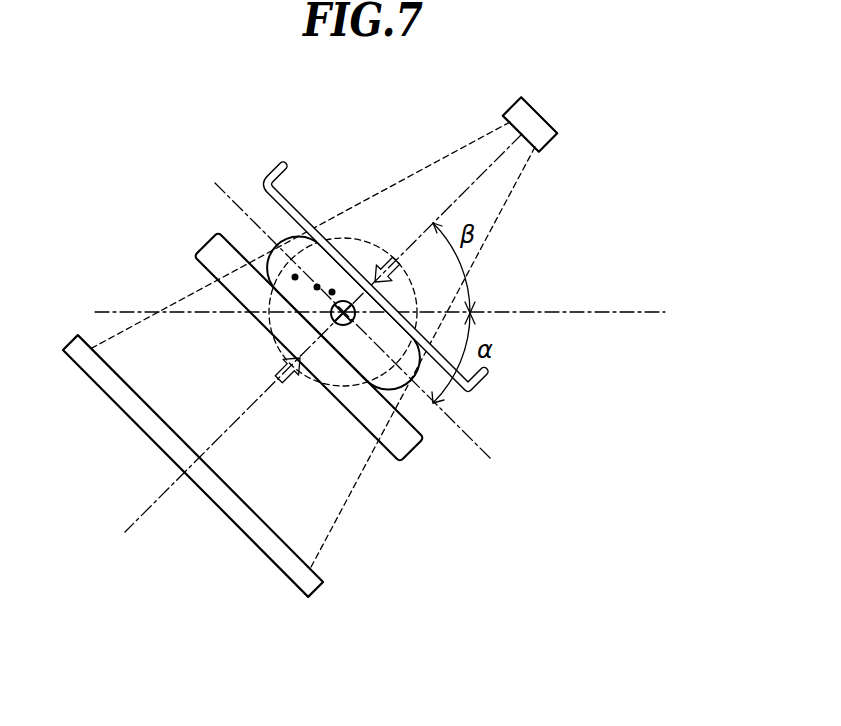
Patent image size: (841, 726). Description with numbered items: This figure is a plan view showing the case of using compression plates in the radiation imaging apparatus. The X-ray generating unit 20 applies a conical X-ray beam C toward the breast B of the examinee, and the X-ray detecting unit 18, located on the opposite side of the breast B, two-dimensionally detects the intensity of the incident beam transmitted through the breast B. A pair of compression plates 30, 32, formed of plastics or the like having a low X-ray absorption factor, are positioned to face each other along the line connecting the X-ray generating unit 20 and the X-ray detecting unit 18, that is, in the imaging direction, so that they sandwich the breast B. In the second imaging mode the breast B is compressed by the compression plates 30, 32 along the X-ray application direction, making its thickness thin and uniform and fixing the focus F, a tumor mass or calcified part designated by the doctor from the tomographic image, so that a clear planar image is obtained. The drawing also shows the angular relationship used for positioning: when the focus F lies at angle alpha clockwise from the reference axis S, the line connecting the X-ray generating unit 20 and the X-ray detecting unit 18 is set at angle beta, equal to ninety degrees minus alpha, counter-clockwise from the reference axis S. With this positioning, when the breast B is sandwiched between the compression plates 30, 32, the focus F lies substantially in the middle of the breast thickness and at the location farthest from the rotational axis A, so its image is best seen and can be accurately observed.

The X-ray detecting unit 18 is at (322, 583).
The X-ray generating unit 20 is at (556, 136).
The compression plate 30 is at (413, 450).
The compression plate 32 is at (485, 383).
The rotational axis A is at (336, 324).
The breast B is at (410, 279).
The X-ray beam C is at (509, 188).
The focus F is at (316, 286).
The reference axis S is at (655, 311).